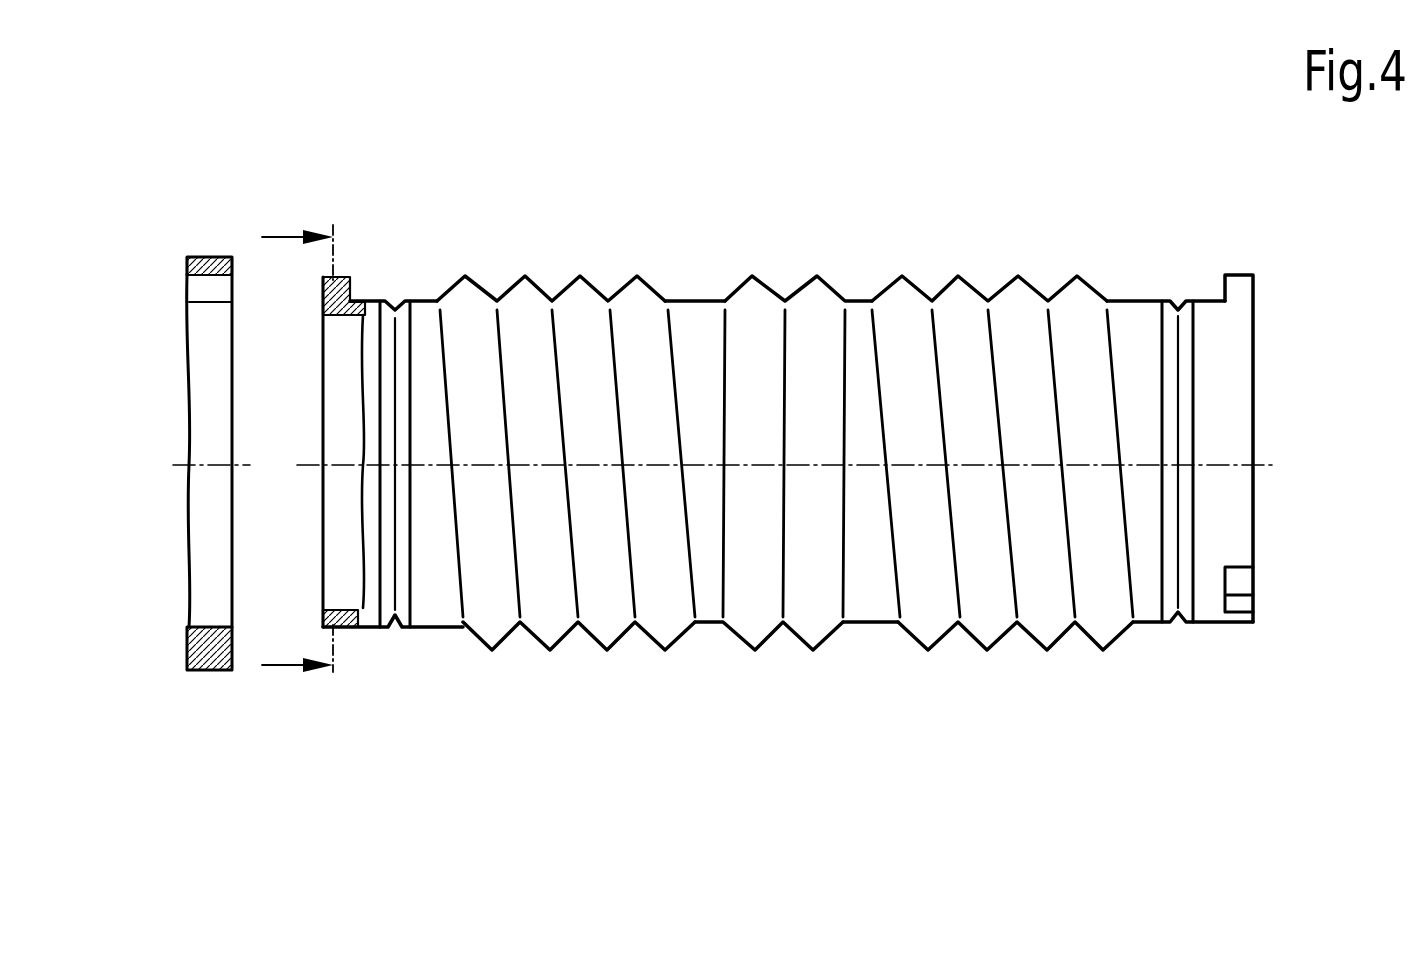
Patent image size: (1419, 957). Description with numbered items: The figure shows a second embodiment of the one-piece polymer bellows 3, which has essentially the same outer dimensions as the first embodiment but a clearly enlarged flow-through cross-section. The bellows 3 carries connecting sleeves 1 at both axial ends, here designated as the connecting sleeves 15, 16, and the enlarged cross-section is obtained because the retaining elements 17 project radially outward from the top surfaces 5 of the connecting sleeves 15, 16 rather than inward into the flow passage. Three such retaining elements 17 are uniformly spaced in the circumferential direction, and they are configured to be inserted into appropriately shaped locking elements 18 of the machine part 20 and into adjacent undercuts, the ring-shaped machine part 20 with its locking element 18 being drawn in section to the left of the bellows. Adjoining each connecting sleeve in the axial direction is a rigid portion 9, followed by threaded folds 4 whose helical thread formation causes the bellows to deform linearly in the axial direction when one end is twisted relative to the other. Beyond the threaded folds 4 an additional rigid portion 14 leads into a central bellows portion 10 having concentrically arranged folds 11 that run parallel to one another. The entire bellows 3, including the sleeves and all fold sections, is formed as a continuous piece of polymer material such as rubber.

The connecting sleeve 1 is at (350, 280).
The bellows 3 is at (495, 183).
The threaded folds 4 is at (637, 283).
The top surface 5 is at (432, 178).
The rigid portion 9 is at (450, 627).
The bellows portion 10 is at (768, 200).
The concentric folds 11 is at (817, 295).
The additional rigid portion 14 is at (690, 300).
The connecting sleeve 15 is at (356, 627).
The connecting sleeve 16 is at (1232, 333).
The retaining element 17 is at (325, 305).
The locking element 18 is at (202, 288).
The machine part 20 is at (207, 668).